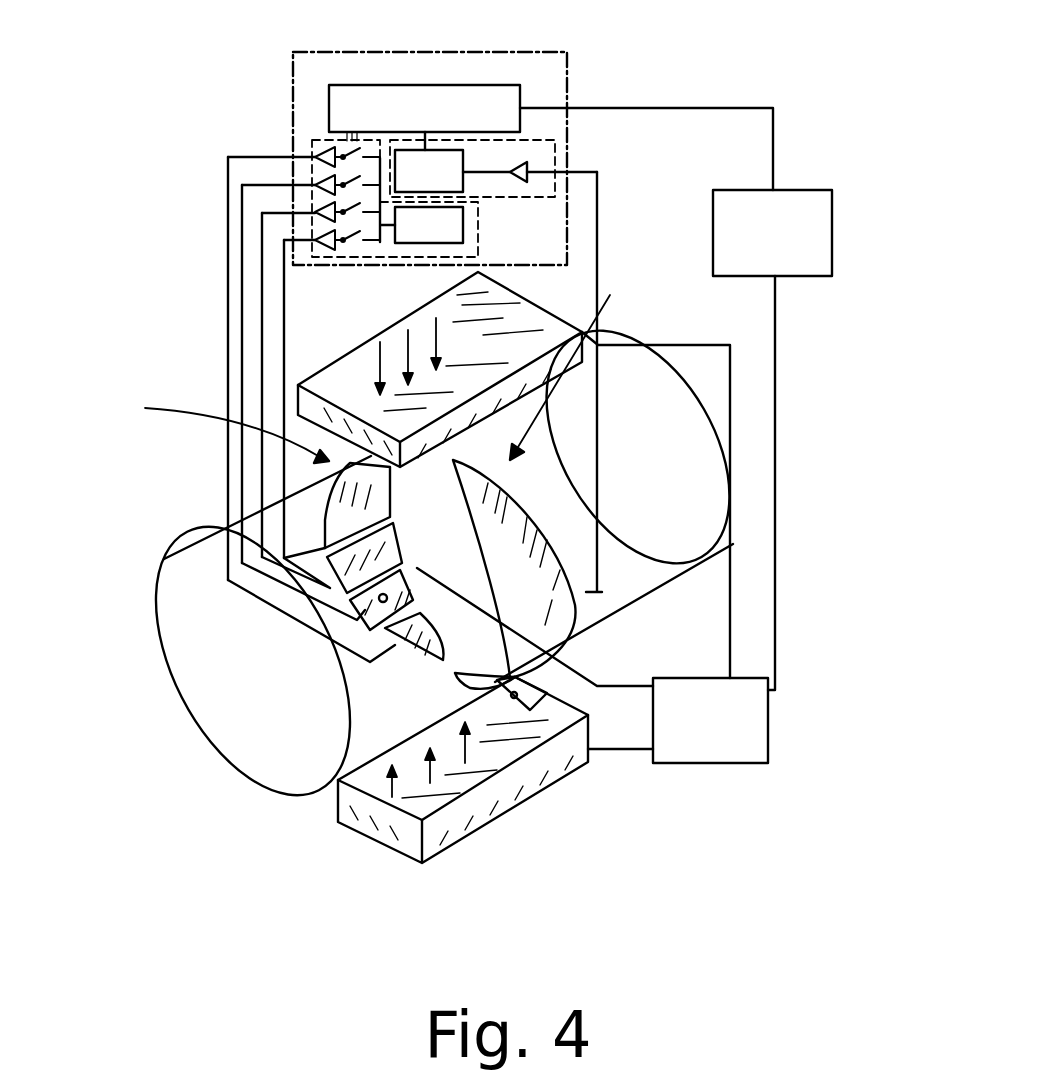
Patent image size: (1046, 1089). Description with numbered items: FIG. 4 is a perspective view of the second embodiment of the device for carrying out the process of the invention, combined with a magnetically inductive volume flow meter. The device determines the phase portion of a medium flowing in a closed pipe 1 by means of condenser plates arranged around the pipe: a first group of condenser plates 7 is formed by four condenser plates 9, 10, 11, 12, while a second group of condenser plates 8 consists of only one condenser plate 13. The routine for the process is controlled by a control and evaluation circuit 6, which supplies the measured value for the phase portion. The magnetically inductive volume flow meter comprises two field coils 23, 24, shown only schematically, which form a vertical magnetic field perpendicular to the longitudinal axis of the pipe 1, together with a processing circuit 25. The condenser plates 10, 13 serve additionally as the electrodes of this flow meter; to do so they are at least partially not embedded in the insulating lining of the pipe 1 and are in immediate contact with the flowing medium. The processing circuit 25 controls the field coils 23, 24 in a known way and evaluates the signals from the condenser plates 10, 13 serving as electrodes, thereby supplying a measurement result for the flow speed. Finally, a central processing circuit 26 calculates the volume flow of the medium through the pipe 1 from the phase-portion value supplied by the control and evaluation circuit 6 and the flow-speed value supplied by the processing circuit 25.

The pipe 1 is at (330, 530).
The control and evaluation circuit 6 is at (553, 70).
The first group of condenser plates 7 is at (219, 425).
The second group of condenser plates 8 is at (573, 357).
The condenser plate 9 is at (403, 643).
The condenser plate 10 is at (355, 600).
The condenser plate 11 is at (327, 557).
The condenser plate 12 is at (325, 548).
The condenser plate 13 is at (560, 602).
The field coil 23 is at (503, 757).
The field coil 24 is at (298, 383).
The processing circuit 25 is at (730, 727).
The central processing circuit 26 is at (800, 213).